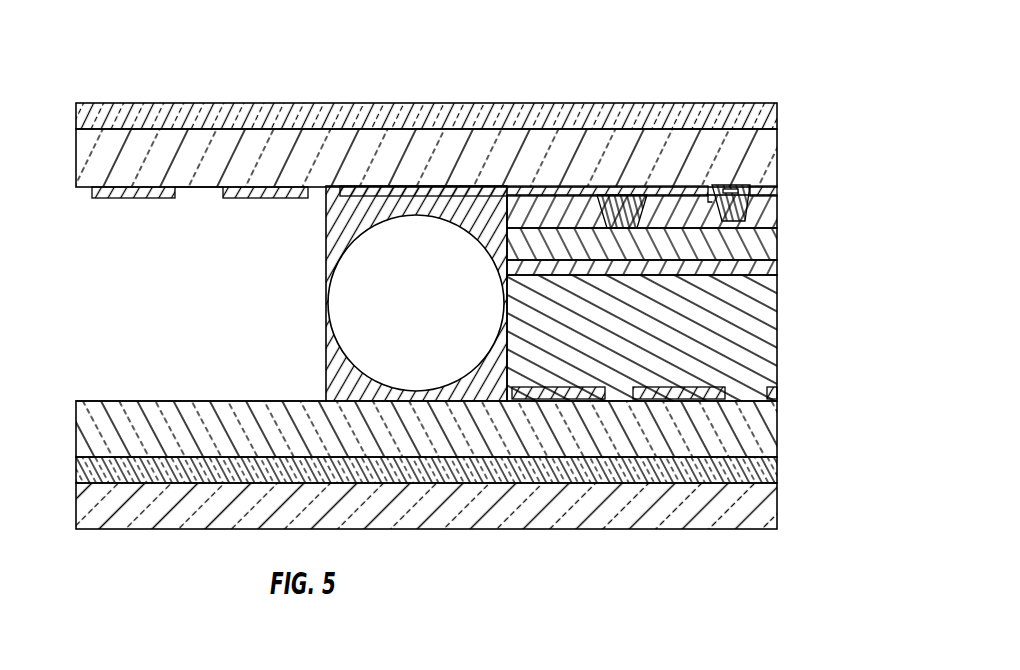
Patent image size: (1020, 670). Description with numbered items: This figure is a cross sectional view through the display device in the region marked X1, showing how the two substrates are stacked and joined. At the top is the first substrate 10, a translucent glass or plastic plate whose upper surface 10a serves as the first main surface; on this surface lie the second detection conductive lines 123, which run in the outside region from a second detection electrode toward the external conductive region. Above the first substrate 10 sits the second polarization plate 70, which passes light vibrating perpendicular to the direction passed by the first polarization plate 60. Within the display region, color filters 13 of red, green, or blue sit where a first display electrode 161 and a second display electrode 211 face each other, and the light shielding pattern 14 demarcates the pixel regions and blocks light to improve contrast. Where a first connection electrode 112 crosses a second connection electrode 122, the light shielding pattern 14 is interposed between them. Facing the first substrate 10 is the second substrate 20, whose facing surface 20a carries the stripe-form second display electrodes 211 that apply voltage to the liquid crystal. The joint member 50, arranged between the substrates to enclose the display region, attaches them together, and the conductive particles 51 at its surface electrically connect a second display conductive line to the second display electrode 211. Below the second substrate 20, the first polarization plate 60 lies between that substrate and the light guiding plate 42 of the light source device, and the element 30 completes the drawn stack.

The region X1 is at (607, 48).
The second polarization plate 70 is at (422, 94).
The first substrate 10 is at (426, 122).
The upper surface 10a is at (199, 131).
The second detection conductive line 123 is at (434, 129).
The color filter 13 is at (636, 144).
The first display electrode 161 is at (642, 177).
The light shielding pattern 14 is at (731, 140).
The first connection electrode 112 is at (719, 121).
The second connection electrode 122 is at (690, 137).
The joint member 50 is at (380, 293).
The conductive particle 51 is at (385, 303).
The thin film transistor layer 30 is at (642, 423).
The second display electrode 211 is at (644, 480).
The second substrate 20 is at (426, 486).
The facing surface 20a is at (201, 478).
The first polarization plate 60 is at (426, 514).
The light guiding plate 42 is at (426, 525).